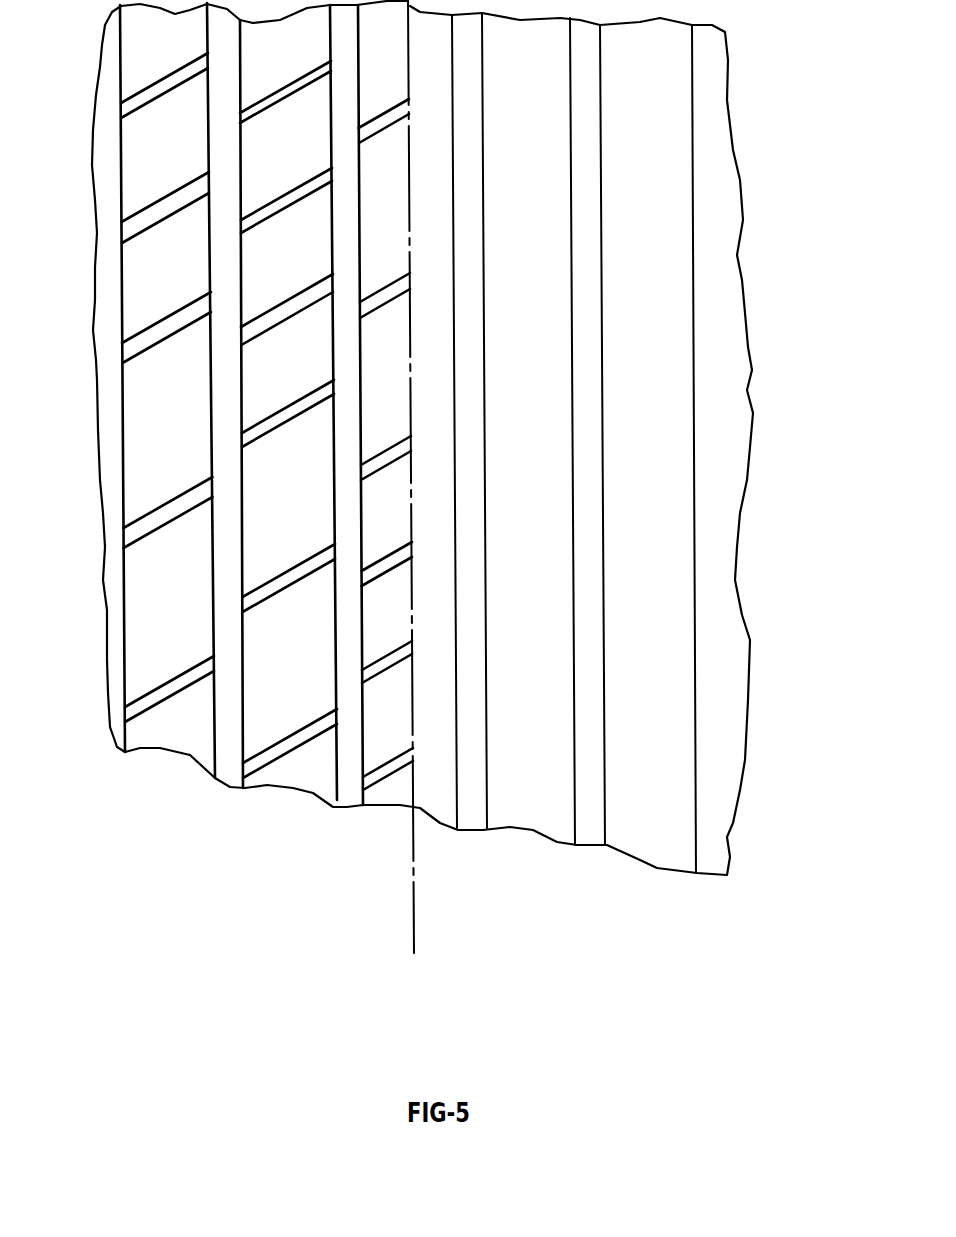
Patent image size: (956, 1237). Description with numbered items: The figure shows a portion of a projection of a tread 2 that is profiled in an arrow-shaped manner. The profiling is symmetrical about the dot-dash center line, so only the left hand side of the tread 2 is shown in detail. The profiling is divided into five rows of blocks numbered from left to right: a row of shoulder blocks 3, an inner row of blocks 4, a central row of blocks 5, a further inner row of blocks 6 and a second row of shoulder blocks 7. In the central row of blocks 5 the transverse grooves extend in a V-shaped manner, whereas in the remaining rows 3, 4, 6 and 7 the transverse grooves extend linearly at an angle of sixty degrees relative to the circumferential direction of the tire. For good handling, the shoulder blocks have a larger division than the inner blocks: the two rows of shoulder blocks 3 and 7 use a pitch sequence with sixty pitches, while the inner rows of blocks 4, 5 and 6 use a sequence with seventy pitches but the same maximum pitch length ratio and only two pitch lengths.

The tread 2 is at (540, 188).
The row of shoulder blocks 3 is at (190, 747).
The inner row of blocks 4 is at (318, 777).
The central row of blocks 5 is at (448, 788).
The inner row of blocks 6 is at (535, 798).
The row of shoulder blocks 7 is at (658, 830).